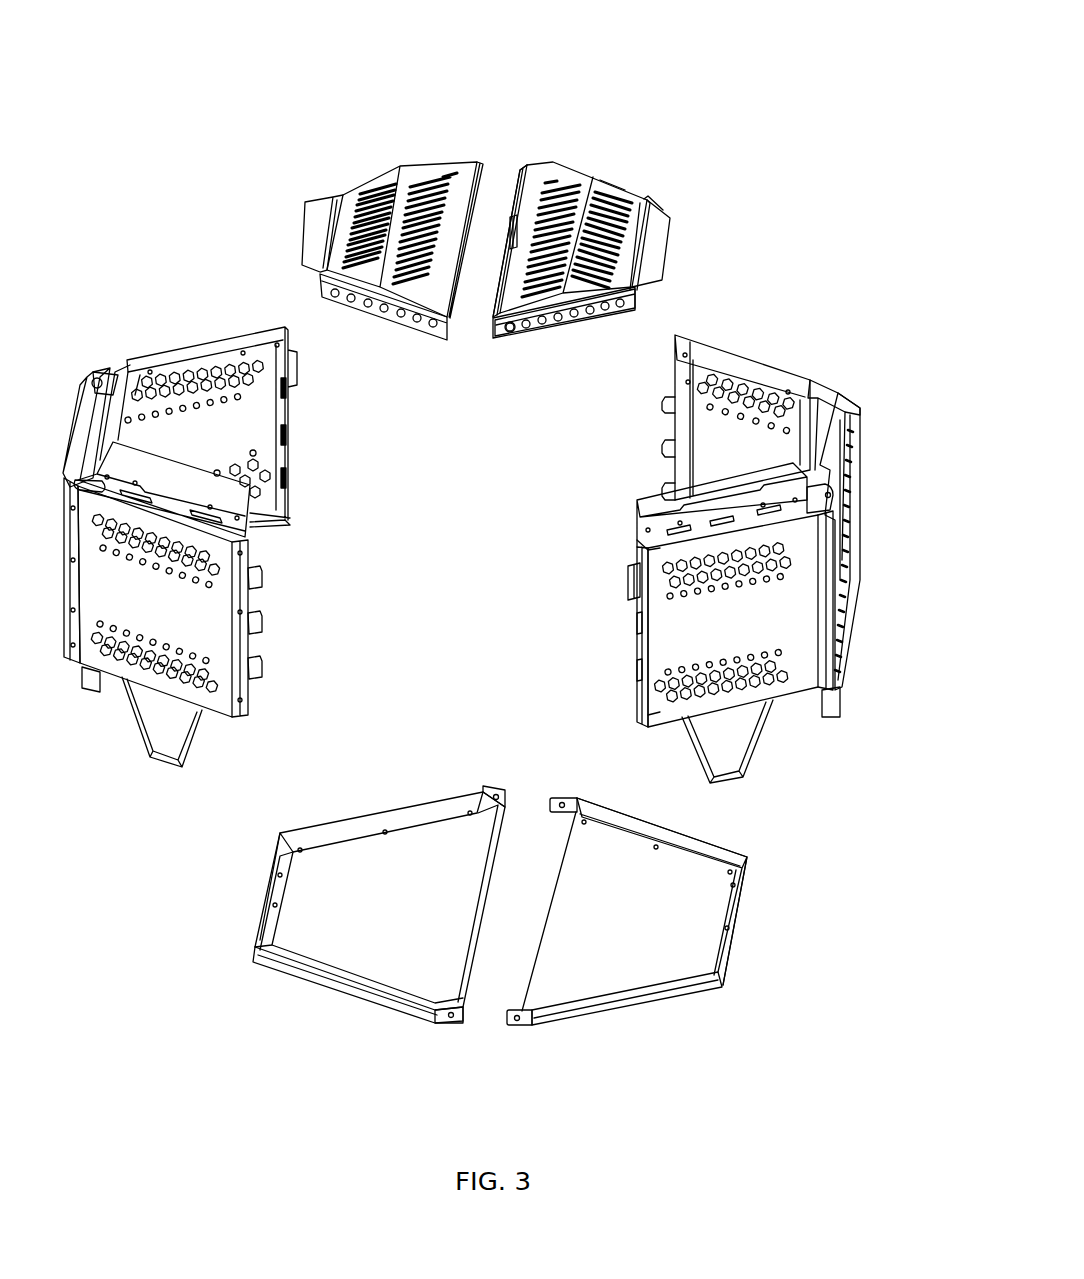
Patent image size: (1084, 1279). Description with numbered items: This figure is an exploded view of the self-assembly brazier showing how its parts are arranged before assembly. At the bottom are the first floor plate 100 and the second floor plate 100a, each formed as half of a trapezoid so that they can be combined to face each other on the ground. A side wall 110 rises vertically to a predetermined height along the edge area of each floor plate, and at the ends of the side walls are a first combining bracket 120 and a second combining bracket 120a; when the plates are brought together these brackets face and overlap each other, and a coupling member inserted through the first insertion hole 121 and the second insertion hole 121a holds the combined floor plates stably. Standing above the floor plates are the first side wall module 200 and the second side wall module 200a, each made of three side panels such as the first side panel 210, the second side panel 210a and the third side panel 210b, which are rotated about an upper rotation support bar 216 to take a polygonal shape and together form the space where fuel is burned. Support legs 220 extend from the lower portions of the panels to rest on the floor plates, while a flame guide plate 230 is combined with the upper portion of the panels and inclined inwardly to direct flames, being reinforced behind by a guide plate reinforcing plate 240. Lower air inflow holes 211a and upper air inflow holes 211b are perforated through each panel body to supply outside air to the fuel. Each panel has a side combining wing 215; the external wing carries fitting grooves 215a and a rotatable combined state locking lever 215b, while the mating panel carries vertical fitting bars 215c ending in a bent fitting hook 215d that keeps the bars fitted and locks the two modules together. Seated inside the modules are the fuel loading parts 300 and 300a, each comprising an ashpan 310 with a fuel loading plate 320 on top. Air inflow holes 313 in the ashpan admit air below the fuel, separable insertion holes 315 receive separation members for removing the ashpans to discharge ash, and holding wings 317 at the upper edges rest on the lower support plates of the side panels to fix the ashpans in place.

The first floor plate 100 is at (628, 960).
The second floor plate 100a is at (345, 962).
The side wall 110 is at (685, 985).
The first combining bracket 120 is at (537, 1024).
The second combining bracket 120a is at (440, 1020).
The first insertion hole 121 is at (525, 1022).
The second insertion hole 121a is at (455, 1025).
The first side wall module 200 is at (792, 328).
The second side wall module 200a is at (149, 308).
The first side panel 210 is at (680, 617).
The second side panel 210a is at (862, 495).
The third side panel 210b is at (712, 423).
The lower air inflow holes 211a is at (670, 705).
The upper air inflow holes 211b is at (672, 560).
The side combining wing 215 is at (640, 690).
The fitting grooves 215a is at (640, 626).
The combined state locking lever 215b is at (628, 577).
The fitting bars 215c is at (262, 628).
The fitting hook 215d is at (262, 666).
The upper rotation support bar 216 is at (823, 400).
The support legs 220 is at (695, 750).
The flame guide plate 230 is at (652, 497).
The guide plate reinforcing plate 240 is at (703, 503).
The fuel loading part 300 is at (573, 145).
The fuel loading part 300a is at (340, 157).
The ashpan 310 is at (527, 327).
The air inflow holes 313 is at (506, 332).
The separable insertion holes 315 is at (511, 216).
The holding wings 317 is at (665, 238).
The fuel loading plate 320 is at (604, 183).